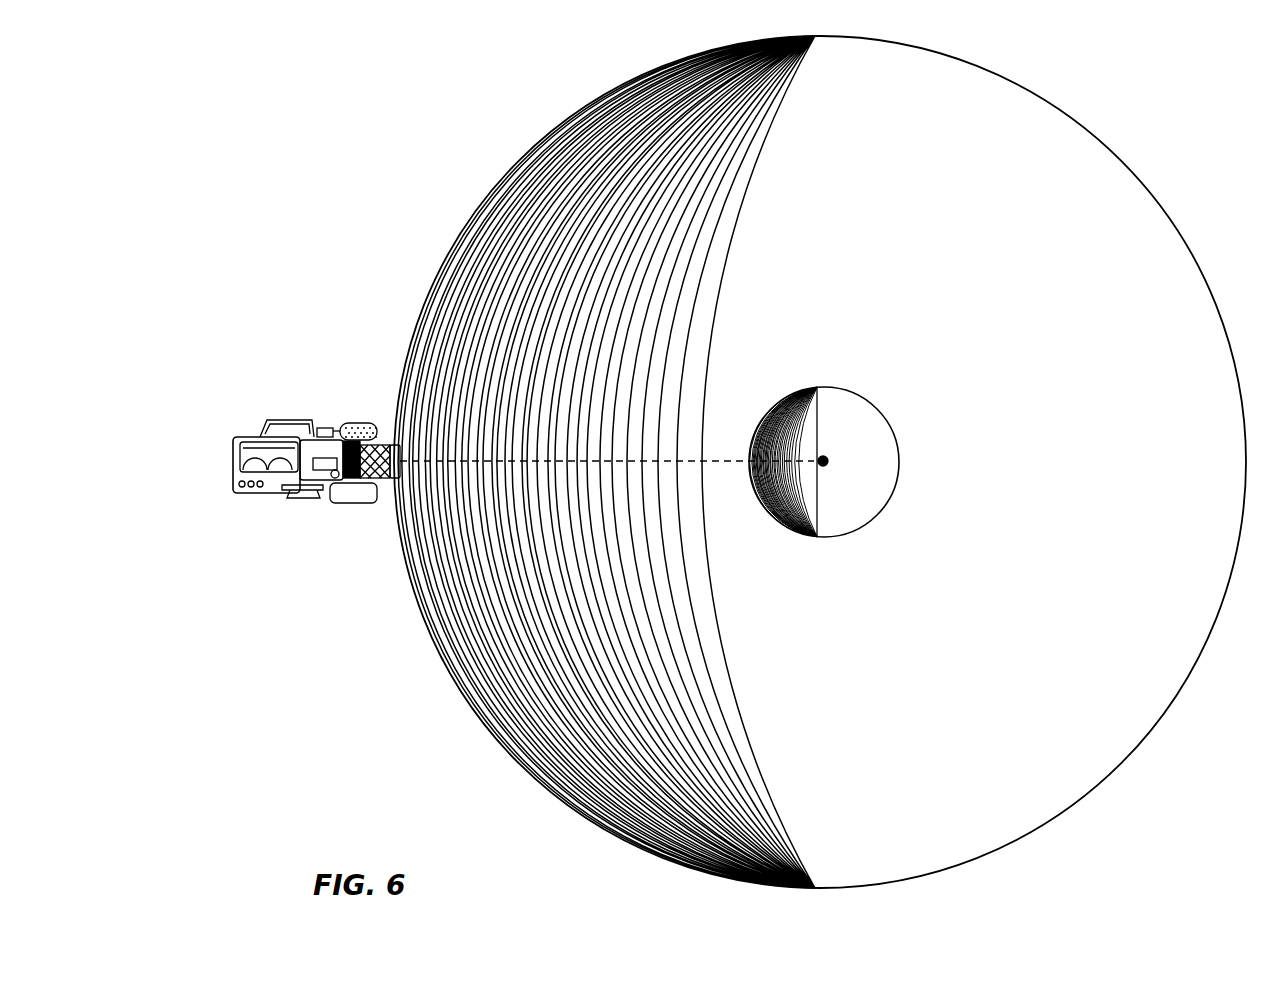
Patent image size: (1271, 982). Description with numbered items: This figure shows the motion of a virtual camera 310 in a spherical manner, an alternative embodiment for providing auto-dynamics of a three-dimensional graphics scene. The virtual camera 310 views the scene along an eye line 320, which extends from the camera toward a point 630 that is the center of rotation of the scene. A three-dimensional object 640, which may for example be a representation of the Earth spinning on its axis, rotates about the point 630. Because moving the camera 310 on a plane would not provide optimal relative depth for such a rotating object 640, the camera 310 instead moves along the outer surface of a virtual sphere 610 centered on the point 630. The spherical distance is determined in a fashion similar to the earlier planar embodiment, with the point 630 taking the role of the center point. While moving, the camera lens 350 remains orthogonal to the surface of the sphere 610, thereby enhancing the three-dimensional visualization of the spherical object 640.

The virtual camera 310 is at (292, 427).
The lens 350 is at (383, 440).
The eye line 320 is at (717, 460).
The virtual sphere 610 is at (1038, 93).
The 3D object 640 is at (848, 390).
The point 630 is at (828, 468).